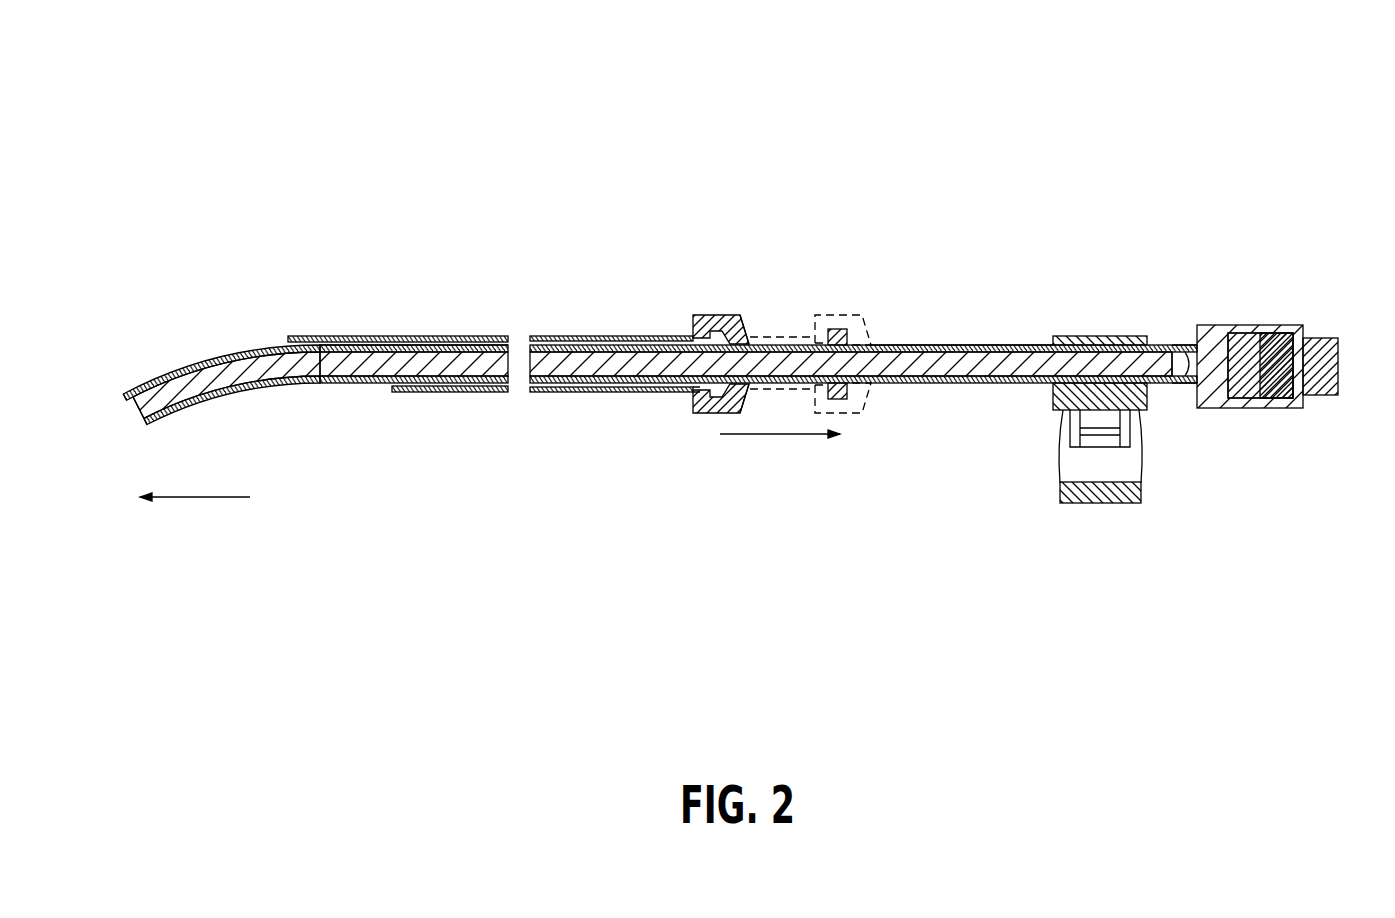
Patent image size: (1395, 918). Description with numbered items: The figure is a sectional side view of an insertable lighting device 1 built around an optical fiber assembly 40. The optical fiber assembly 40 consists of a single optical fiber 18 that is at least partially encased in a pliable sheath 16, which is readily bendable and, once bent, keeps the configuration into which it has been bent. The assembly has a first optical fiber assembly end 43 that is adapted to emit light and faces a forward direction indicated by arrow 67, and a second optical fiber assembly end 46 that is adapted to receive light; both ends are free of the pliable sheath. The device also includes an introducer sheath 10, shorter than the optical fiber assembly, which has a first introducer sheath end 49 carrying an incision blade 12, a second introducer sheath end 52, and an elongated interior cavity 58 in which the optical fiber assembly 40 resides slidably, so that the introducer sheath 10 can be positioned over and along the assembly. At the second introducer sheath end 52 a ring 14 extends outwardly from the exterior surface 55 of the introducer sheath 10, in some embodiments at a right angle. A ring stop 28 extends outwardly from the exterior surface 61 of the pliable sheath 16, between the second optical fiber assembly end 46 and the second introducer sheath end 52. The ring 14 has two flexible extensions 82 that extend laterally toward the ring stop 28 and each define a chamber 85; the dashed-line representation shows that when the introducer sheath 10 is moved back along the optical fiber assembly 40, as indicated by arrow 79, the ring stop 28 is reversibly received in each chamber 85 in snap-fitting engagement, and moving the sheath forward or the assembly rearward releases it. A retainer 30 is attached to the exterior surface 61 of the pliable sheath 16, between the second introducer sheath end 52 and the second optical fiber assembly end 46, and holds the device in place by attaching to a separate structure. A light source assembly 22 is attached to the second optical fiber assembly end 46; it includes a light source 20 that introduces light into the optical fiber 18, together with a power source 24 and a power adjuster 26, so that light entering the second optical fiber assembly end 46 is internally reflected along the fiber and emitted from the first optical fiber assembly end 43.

The insertable lighting device 1 is at (1067, 222).
The introducer sheath 10 is at (593, 393).
The incision blade 12 is at (292, 338).
The ring 14 is at (778, 343).
The pliable sheath 16 is at (212, 355).
The optical fiber 18 is at (210, 393).
The light source 20 is at (1186, 362).
The light source assembly 22 is at (1272, 355).
The power source 24 is at (1274, 397).
The power adjuster 26 is at (1318, 338).
The ring stop 28 is at (851, 398).
The retainer 30 is at (1090, 336).
The optical fiber assembly 40 is at (311, 401).
The first optical fiber assembly end 43 is at (143, 420).
The second optical fiber assembly end 46 is at (1183, 343).
The first introducer sheath end 49 is at (318, 341).
The second introducer sheath end 52 is at (692, 392).
The exterior surface 55 is at (600, 336).
The elongated interior cavity 58 is at (380, 393).
The exterior surface 61 is at (955, 343).
The arrow 67 is at (200, 499).
The arrow 79 is at (781, 440).
The flexible extension 82 is at (750, 314).
The chamber 85 is at (720, 316).